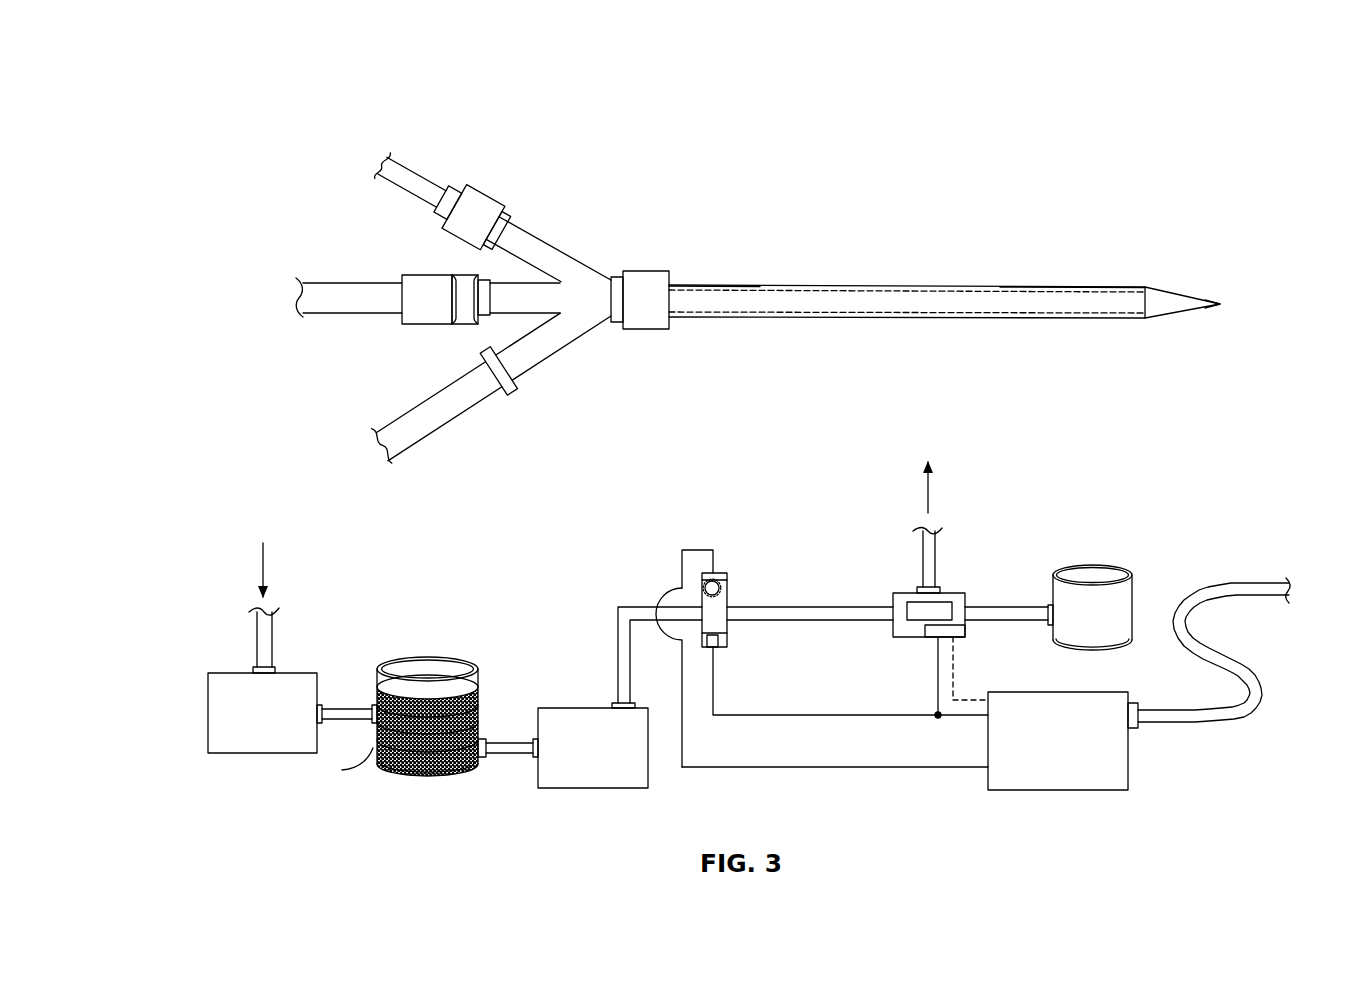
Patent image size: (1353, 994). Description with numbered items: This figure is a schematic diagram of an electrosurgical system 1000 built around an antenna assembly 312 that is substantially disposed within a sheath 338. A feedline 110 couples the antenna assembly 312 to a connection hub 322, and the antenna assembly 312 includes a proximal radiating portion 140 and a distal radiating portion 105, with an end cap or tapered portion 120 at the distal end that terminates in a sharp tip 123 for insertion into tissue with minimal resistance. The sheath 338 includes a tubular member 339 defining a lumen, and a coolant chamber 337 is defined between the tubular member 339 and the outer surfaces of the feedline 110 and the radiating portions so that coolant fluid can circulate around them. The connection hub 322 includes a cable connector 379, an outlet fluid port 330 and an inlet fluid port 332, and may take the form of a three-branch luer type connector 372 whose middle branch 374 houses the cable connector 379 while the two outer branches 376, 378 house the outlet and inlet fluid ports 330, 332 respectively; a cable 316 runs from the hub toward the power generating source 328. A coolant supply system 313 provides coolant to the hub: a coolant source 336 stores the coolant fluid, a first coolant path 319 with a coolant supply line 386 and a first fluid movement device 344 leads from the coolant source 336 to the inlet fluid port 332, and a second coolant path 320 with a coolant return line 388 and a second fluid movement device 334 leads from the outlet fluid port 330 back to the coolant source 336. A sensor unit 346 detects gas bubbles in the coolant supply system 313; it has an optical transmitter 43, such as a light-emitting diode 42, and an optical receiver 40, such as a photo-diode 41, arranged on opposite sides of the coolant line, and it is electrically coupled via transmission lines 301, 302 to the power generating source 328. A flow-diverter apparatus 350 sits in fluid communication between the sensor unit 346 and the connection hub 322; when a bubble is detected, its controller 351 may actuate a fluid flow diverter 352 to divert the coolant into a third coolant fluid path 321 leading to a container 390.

The electrosurgical system 1000 is at (1112, 150).
The antenna assembly 312 is at (908, 213).
The feedline 110 is at (725, 278).
The proximal radiating portion 140 is at (878, 278).
The distal radiating portion 105 is at (1063, 280).
The end cap or tapered portion 120 is at (1172, 292).
The tip 123 is at (1220, 304).
The sheath 338 is at (718, 327).
The tubular member 339 is at (860, 318).
The coolant chamber 337 is at (1000, 318).
The three-branch luer type connector 372 is at (352, 250).
The cable 316 is at (355, 283).
The power generating source 328 is at (278, 297).
The cable connector 379 is at (427, 275).
The middle branch 374 is at (512, 309).
The outer branch 376 is at (537, 248).
The outer branch 378 is at (557, 340).
The outlet fluid port 330 is at (485, 205).
The coolant return line 388 is at (408, 175).
The second fluid movement device 334 is at (375, 160).
The coolant supply line 386 is at (437, 415).
The inlet fluid port 332 is at (515, 390).
The connection hub 322 is at (610, 402).
The flow-diverter apparatus 350 is at (372, 456).
The coolant supply system 313 is at (610, 527).
The second coolant path 320 is at (237, 600).
The first coolant path 319 is at (520, 645).
The coolant source 336 is at (480, 688).
The first fluid movement device 344 is at (612, 761).
The sensor unit 346 is at (735, 560).
The light-emitting diode 42 is at (722, 583).
The optical transmitter 43 is at (729, 592).
The optical receiver 40 is at (729, 637).
The photo-diode 41 is at (717, 640).
The fluid flow diverter 352 is at (930, 607).
The controller 351 is at (957, 631).
The third coolant fluid path 321 is at (1035, 596).
The container 390 is at (1135, 592).
The transmission line 302 is at (843, 714).
The transmission line 301 is at (830, 767).